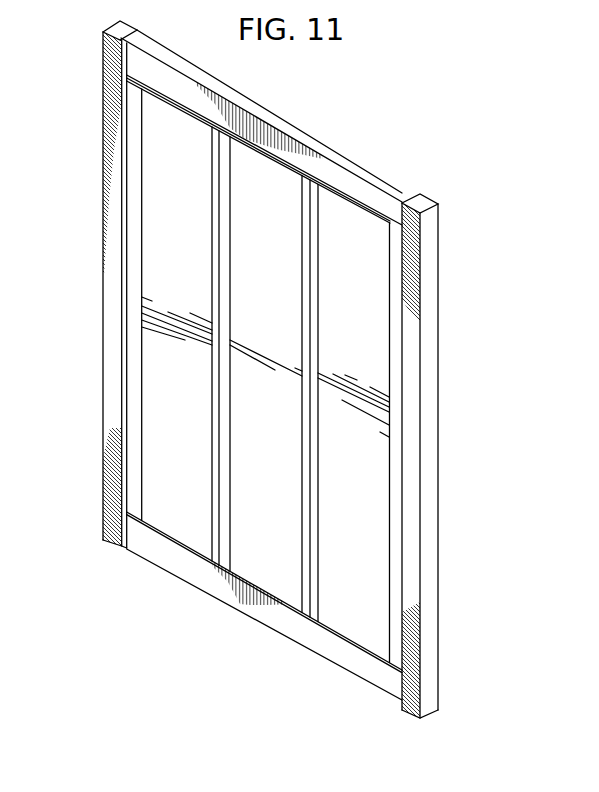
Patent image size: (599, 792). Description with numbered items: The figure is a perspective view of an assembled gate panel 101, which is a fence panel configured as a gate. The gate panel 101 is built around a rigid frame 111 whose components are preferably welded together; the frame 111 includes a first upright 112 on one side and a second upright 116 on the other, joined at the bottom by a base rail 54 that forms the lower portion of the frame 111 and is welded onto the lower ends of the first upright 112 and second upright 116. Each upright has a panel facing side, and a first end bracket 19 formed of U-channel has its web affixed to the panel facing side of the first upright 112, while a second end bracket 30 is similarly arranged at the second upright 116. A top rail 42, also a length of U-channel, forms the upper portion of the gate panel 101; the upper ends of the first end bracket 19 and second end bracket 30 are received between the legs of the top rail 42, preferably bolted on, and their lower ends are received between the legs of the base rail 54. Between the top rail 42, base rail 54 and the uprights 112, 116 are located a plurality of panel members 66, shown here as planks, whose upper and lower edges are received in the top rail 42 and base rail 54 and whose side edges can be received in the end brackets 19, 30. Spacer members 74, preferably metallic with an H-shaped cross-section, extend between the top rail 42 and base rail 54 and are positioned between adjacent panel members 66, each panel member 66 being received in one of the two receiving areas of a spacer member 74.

The gate panel 101 is at (406, 67).
The first upright 112 is at (101, 283).
The second upright 116 is at (442, 452).
The frame 111 is at (100, 463).
The top rail 42 is at (357, 187).
The base rail 54 is at (144, 555).
The panel members 66 is at (172, 522).
The spacer members 74 is at (212, 548).
The second end bracket 30 is at (390, 295).
The first end bracket 19 is at (135, 199).